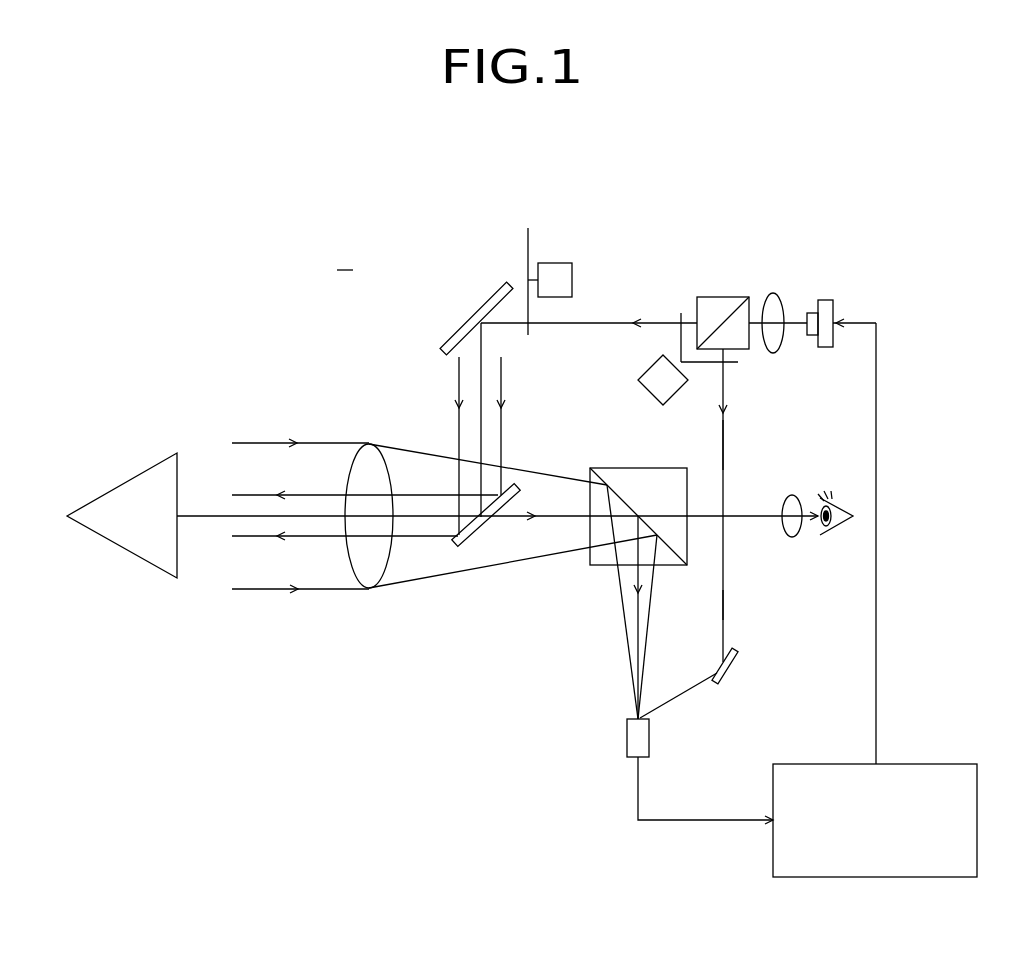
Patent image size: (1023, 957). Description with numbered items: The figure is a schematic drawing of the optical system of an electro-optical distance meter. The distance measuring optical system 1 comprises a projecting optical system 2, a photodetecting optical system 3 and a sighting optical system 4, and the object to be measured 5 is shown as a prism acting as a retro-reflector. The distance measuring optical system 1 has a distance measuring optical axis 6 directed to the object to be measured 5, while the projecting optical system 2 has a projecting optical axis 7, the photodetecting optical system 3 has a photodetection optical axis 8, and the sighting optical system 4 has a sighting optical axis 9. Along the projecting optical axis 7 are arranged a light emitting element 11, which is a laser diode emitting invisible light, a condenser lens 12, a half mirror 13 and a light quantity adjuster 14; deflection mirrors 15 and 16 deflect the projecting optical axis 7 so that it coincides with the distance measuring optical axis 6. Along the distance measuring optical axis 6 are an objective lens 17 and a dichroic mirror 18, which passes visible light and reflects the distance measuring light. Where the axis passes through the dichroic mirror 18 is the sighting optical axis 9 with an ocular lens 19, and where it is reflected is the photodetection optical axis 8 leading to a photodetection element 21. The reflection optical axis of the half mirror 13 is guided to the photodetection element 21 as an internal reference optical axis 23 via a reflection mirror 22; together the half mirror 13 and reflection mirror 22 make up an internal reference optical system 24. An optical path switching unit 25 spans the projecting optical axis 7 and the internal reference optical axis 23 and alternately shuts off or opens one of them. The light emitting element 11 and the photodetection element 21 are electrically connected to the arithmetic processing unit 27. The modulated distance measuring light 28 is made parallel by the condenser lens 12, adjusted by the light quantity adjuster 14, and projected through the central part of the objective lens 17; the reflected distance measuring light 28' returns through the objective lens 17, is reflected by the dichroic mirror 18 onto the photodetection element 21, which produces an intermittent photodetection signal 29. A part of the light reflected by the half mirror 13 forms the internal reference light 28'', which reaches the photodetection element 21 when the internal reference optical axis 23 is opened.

The distance measuring optical system 1 is at (345, 258).
The projecting optical system 2 is at (668, 250).
The photodetecting optical system 3 is at (567, 585).
The sighting optical system 4 is at (776, 483).
The object to be measured 5 is at (118, 485).
The distance measuring optical axis 6 is at (207, 516).
The projecting optical axis 7 is at (590, 323).
The photodetection optical axis 8 is at (640, 618).
The sighting optical axis 9 is at (740, 516).
The light emitting element 11 is at (830, 300).
The condenser lens 12 is at (775, 293).
The half mirror 13 is at (728, 297).
The light quantity adjuster 14 is at (560, 263).
The deflection mirror 15 is at (487, 300).
The deflection mirror 16 is at (478, 540).
The objective lens 17 is at (388, 570).
The dichroic mirror 18 is at (617, 468).
The ocular lens 19 is at (795, 535).
The photodetection element 21 is at (650, 738).
The reflection mirror 22 is at (735, 660).
The internal reference optical axis 23 is at (725, 555).
The internal reference optical system 24 is at (737, 603).
The optical path switching unit 25 is at (645, 368).
The arithmetic processing unit 27 is at (910, 764).
The distance measuring light 28 is at (365, 447).
The reflected distance measuring light 28' is at (291, 650).
The internal reference light 28'' is at (679, 445).
The photodetection signal 29 is at (705, 822).